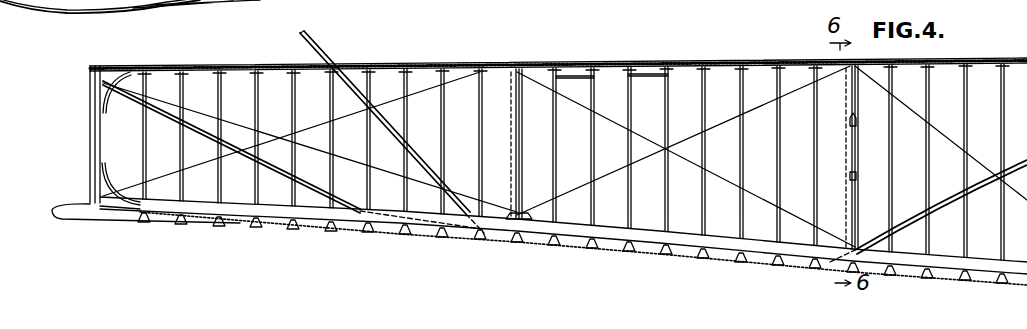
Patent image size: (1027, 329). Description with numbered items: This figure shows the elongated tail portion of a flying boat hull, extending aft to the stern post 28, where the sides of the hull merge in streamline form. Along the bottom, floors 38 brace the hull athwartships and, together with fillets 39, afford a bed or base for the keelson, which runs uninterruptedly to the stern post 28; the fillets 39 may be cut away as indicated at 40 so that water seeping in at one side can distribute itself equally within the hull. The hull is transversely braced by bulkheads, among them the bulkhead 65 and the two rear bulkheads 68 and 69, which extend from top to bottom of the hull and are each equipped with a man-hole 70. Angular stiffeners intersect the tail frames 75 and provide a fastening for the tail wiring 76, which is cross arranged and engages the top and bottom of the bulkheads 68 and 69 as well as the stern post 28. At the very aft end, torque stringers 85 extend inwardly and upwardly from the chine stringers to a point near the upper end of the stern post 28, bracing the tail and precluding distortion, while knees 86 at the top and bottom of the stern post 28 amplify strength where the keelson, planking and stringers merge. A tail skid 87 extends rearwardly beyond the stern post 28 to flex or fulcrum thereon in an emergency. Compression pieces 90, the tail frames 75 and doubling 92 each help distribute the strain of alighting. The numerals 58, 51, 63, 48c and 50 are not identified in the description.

The stern post 28 is at (103, 100).
The fillets 39 is at (723, 253).
The cut-away portion of fillets 40 is at (903, 273).
The bulkhead 68 is at (852, 218).
The bulkhead 69 is at (510, 205).
The man-hole 70 is at (519, 163).
The tail frames 75 is at (558, 100).
The tail wiring 76 is at (647, 160).
The torque stringers 85 is at (280, 178).
The knees 86 is at (126, 73).
The tail skid 87 is at (67, 216).
The compression pieces 90 is at (540, 66).
The doubling 92 is at (653, 68).
The wing surface 58 is at (55, 0).
The rib 51 is at (121, 2).
The strut 63 is at (167, 3).
The section line 48c is at (173, 12).
The member 50 is at (239, 2).
The bulkhead 65 is at (421, 10).
The floors 38 is at (491, 5).